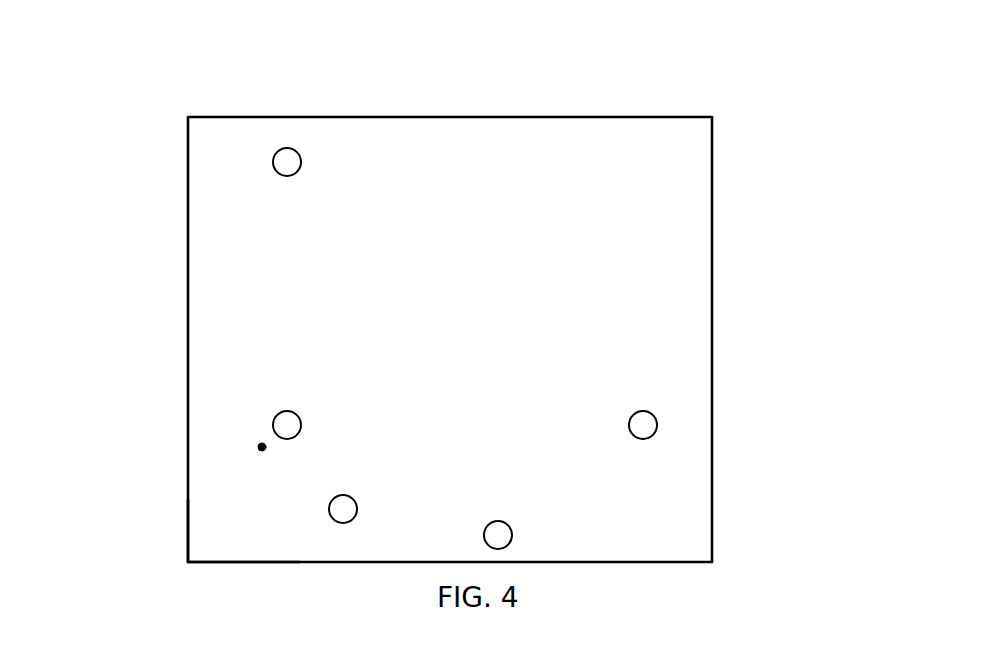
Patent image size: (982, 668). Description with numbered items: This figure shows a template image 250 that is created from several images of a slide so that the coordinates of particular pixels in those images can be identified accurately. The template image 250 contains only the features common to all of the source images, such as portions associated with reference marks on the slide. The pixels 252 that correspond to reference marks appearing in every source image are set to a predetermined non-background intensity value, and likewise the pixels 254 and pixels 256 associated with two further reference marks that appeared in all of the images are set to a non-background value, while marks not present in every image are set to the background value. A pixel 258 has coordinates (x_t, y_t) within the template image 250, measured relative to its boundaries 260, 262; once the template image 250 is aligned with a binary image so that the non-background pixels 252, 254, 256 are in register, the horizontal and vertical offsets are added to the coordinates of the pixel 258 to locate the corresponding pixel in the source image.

The template image 250 is at (712, 280).
The pixels associated with reference marks 252 is at (297, 153).
The pixels associated with reference mark 254 is at (333, 522).
The pixels associated with reference mark 256 is at (512, 535).
The pixel 258 is at (262, 447).
The vertical edge of screen 260 is at (187, 525).
The horizontal edge of screen 262 is at (227, 563).